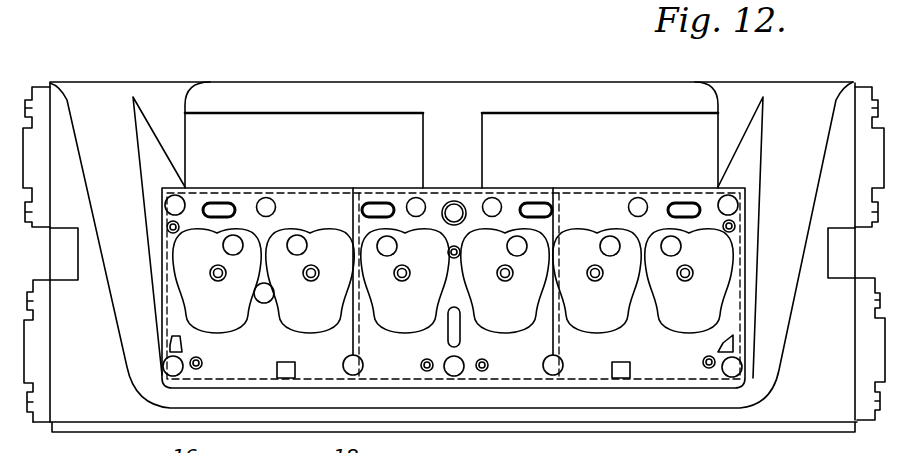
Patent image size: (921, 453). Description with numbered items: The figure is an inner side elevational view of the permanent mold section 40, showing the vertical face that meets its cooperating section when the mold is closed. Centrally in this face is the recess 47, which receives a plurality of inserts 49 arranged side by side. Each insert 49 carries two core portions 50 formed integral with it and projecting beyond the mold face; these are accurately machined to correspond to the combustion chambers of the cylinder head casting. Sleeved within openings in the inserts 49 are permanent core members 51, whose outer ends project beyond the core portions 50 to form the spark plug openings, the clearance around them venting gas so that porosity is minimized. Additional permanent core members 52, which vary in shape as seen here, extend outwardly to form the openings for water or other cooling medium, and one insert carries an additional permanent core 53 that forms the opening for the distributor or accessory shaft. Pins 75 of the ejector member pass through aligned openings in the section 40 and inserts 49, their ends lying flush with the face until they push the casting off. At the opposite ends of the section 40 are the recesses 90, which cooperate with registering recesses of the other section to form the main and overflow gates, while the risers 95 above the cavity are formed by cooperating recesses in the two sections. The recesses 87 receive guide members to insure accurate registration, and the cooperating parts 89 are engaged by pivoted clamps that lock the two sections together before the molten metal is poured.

The permanent mold section 40 is at (568, 87).
The recess 47 is at (173, 306).
The insert 49 is at (388, 187).
The core portion 50 is at (240, 260).
The permanent core member 51 is at (217, 281).
The permanent core member 52 is at (222, 203).
The additional permanent core 53 is at (454, 200).
The pin 75 is at (179, 200).
The recess 87 is at (63, 232).
The cooperating part 89 is at (38, 100).
The recess 90 is at (86, 183).
The riser 95 is at (345, 128).